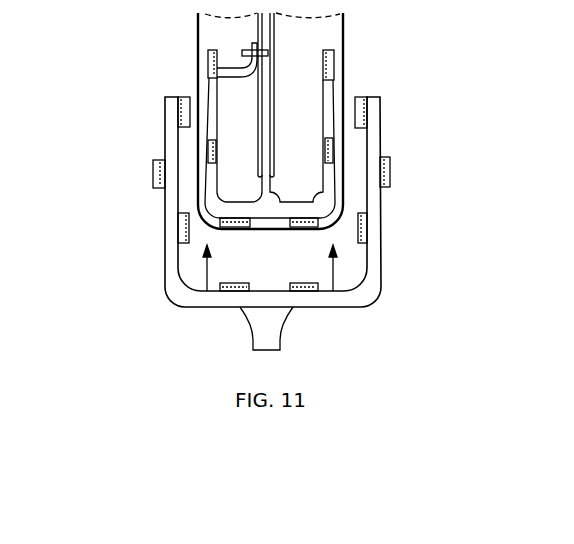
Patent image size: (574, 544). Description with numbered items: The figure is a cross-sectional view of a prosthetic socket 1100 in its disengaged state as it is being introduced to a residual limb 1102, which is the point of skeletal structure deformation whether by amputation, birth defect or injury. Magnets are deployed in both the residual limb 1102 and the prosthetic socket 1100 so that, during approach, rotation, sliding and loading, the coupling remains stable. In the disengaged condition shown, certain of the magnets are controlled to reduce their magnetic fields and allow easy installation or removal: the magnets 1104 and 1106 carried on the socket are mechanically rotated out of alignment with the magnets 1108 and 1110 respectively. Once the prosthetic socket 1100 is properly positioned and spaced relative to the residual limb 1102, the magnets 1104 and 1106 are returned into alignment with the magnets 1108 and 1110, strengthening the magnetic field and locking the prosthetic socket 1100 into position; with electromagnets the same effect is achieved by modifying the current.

The prosthetic socket 1100 is at (212, 300).
The residual limb 1102 is at (318, 128).
The magnet 1104 is at (152, 180).
The magnet 1106 is at (390, 177).
The magnet 1108 is at (178, 237).
The magnet 1110 is at (367, 230).